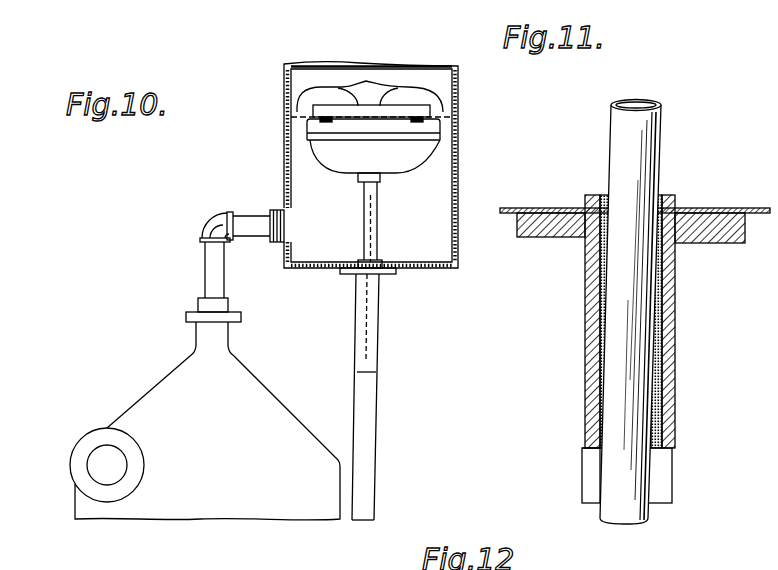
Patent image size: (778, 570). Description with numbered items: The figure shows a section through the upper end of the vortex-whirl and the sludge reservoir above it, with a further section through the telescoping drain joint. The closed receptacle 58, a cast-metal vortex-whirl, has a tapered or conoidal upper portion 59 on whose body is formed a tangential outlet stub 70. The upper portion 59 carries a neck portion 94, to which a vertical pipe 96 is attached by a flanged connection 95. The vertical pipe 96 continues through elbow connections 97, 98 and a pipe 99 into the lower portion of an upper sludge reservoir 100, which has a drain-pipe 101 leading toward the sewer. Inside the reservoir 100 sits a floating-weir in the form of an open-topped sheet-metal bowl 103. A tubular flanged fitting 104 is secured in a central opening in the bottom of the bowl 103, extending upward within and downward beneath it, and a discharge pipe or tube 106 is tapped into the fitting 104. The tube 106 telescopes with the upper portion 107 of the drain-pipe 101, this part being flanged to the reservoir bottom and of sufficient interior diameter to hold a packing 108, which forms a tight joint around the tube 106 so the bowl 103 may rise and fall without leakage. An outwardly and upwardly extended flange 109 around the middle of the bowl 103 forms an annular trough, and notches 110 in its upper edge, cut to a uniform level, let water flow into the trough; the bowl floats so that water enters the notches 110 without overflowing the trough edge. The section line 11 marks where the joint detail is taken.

In FIG. 10, the section line 11 is at (313, 346).
In FIG. 10, the closed receptacle 58 is at (80, 505).
In FIG. 10, the upper portion 59 is at (277, 400).
In FIG. 10, the outlet stub 70 is at (90, 452).
In FIG. 10, the neck portion 94 is at (204, 334).
In FIG. 10, the flanged connection 95 is at (241, 318).
In FIG. 10, the vertical pipe 96 is at (210, 269).
In FIG. 10, the elbow connection 97 is at (200, 240).
In FIG. 10, the elbow connection 98 is at (218, 213).
In FIG. 10, the pipe 99 is at (250, 222).
In FIG. 10, the upper sludge reservoir 100 is at (285, 127).
In FIG. 11, the upper sludge reservoir 100 is at (513, 208).
In FIG. 11, the drain-pipe 101 is at (583, 480).
In FIG. 10, the bowl 103 is at (371, 139).
In FIG. 10, the tubular flanged fitting 104 is at (358, 183).
In FIG. 10, the discharge pipe 106 is at (378, 210).
In FIG. 11, the discharge pipe 106 is at (650, 158).
In FIG. 10, the upper portion of the pipe 107 is at (356, 296).
In FIG. 11, the upper portion of the pipe 107 is at (584, 326).
In FIG. 11, the packing 108 is at (676, 334).
In FIG. 10, the flange 109 is at (432, 133).
In FIG. 10, the notches 110 is at (346, 92).